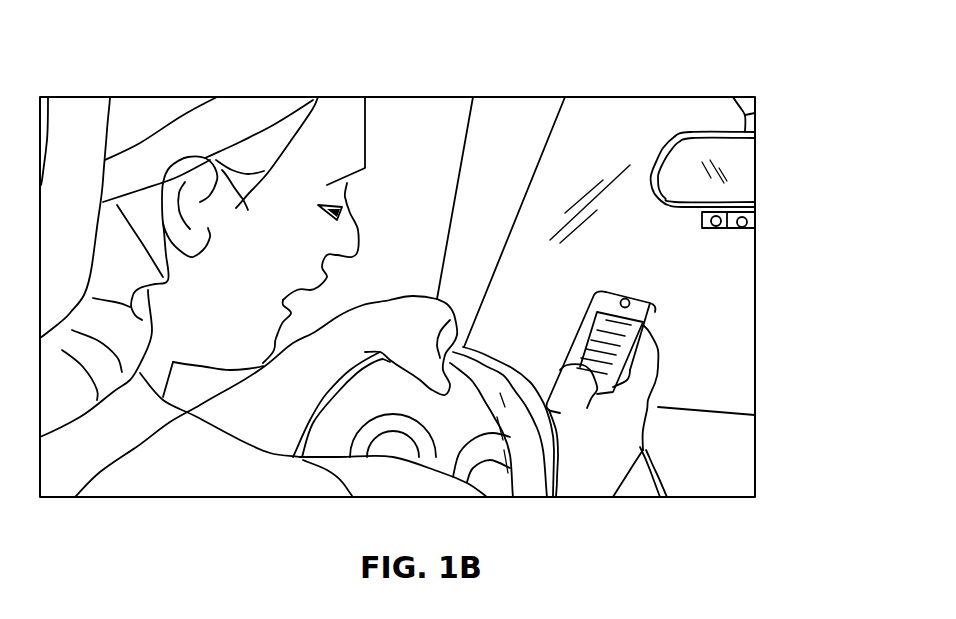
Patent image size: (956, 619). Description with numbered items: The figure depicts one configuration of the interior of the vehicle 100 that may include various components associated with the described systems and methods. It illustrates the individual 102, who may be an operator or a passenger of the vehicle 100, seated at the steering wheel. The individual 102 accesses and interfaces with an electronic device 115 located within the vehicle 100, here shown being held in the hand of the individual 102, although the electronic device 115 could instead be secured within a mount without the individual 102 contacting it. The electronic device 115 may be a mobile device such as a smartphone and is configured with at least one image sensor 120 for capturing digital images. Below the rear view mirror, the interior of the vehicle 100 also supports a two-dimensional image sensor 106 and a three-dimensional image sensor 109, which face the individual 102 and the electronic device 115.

The vehicle 100 is at (616, 50).
The individual 102 is at (367, 123).
The 2-D image sensor 106 is at (718, 228).
The 3-D image sensor 109 is at (748, 222).
The electronic device 115 is at (658, 331).
The image sensor 120 is at (648, 296).